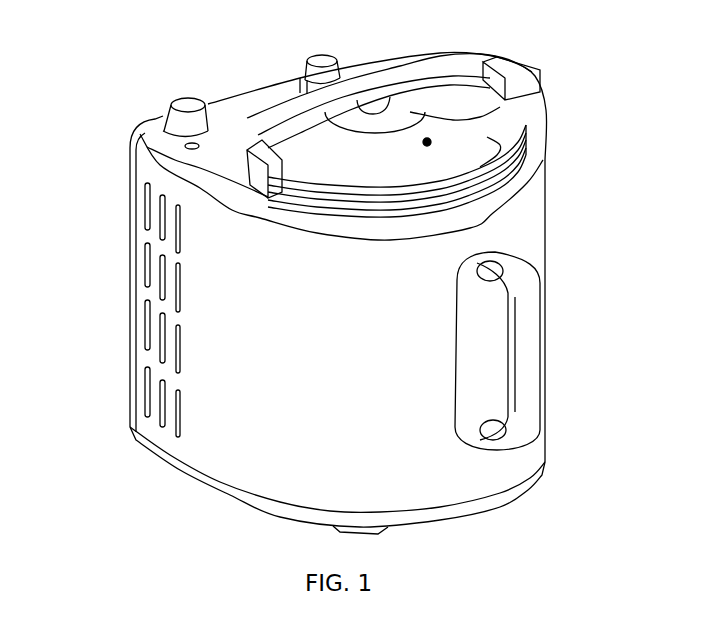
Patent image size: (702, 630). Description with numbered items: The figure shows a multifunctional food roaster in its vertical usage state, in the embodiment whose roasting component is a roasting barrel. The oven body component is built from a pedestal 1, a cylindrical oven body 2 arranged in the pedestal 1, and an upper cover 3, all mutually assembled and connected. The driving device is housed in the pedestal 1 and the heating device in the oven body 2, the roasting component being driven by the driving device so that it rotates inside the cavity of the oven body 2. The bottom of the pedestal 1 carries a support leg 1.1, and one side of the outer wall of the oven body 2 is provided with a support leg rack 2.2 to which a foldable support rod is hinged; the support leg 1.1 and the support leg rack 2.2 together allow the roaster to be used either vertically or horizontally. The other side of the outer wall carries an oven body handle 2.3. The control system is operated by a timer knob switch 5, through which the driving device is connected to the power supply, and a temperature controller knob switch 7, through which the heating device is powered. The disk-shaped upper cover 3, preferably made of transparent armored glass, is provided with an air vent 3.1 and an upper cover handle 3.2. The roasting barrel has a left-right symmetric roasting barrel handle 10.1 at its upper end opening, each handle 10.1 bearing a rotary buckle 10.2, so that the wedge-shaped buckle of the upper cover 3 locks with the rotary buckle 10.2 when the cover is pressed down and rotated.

The pedestal 1 is at (170, 456).
The support leg 1.1 is at (380, 533).
The oven body 2 is at (148, 303).
The support leg rack 2.2 is at (130, 146).
The oven body handle 2.3 is at (527, 320).
The upper cover 3 is at (487, 137).
The air vent 3.1 is at (497, 125).
The upper cover handle 3.2 is at (407, 68).
The timer knob switch 5 is at (313, 58).
The temperature controller knob switch 7 is at (185, 99).
The roasting barrel handle 10.1 is at (238, 149).
The rotary buckle 10.2 is at (497, 60).